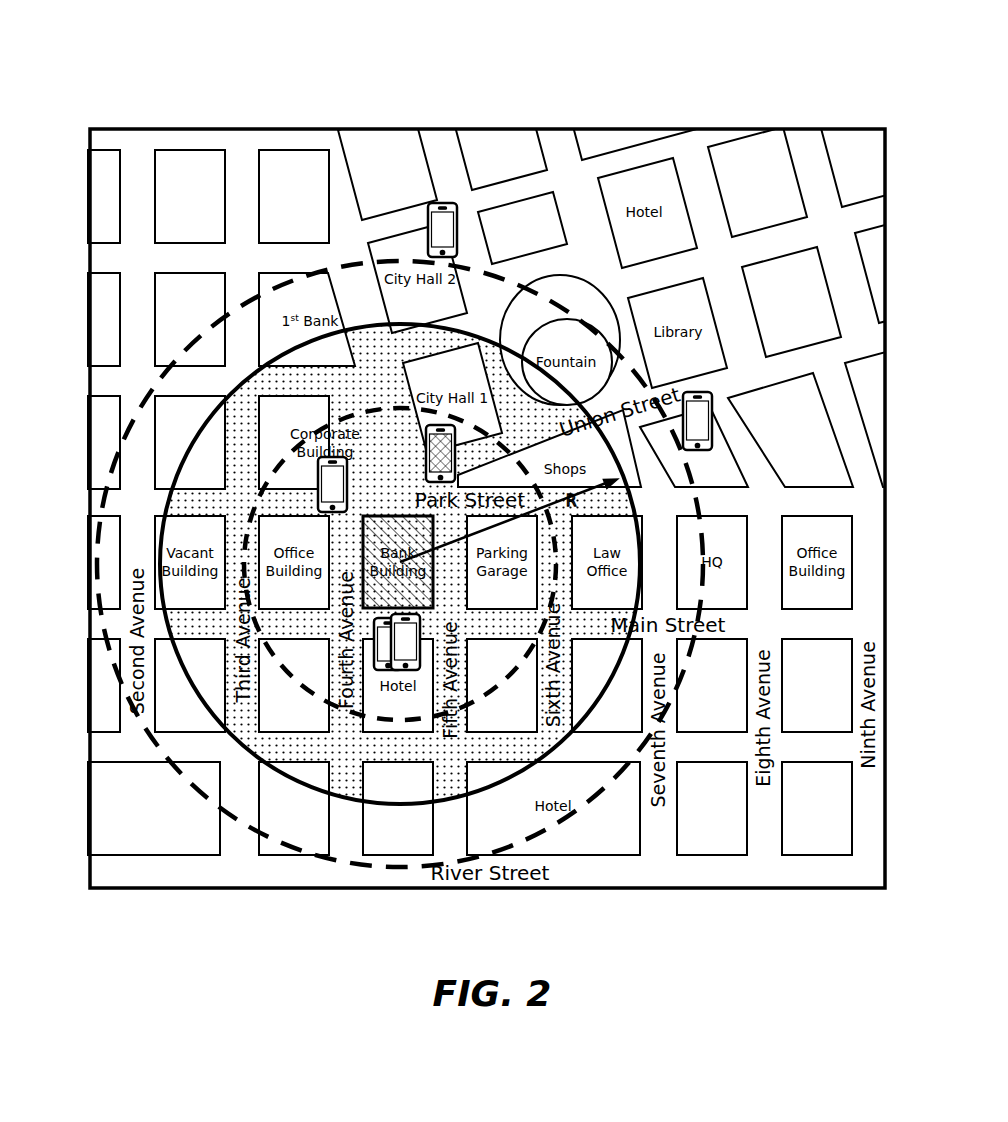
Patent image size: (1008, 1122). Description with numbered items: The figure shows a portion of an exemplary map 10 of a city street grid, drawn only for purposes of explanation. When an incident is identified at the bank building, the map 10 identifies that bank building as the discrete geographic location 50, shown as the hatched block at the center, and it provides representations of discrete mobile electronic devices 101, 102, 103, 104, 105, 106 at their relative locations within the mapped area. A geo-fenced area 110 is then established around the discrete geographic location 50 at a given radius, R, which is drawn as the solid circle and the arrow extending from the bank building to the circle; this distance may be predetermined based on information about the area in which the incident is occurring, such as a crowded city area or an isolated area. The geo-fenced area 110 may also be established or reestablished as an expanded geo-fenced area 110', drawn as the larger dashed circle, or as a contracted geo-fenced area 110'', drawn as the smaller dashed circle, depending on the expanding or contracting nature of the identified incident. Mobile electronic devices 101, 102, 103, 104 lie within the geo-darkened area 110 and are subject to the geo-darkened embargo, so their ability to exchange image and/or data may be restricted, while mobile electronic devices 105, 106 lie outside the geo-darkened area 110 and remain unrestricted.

The map 10 is at (361, 82).
The discrete geographic location 50 is at (403, 523).
The mobile electronic device 101 is at (330, 482).
The mobile electronic device 102 is at (405, 647).
The mobile electronic device 103 is at (388, 645).
The mobile electronic device 104 is at (440, 440).
The mobile electronic device 105 is at (698, 410).
The mobile electronic device 106 is at (445, 225).
The geo-fenced area 110 is at (364, 427).
The expanded geo-fenced area 110' is at (400, 435).
The contracted geo-fenced area 110'' is at (293, 443).